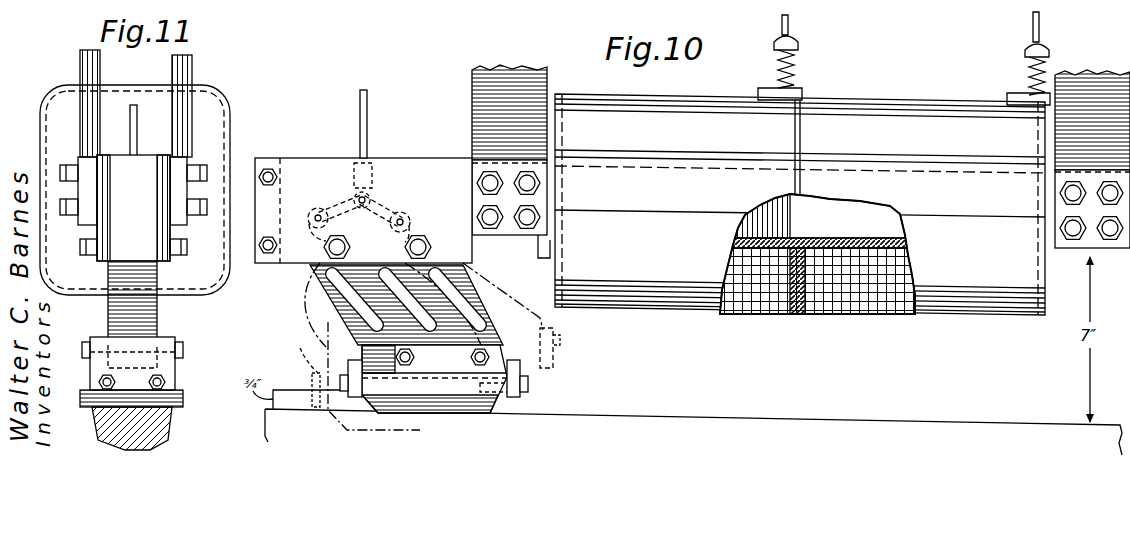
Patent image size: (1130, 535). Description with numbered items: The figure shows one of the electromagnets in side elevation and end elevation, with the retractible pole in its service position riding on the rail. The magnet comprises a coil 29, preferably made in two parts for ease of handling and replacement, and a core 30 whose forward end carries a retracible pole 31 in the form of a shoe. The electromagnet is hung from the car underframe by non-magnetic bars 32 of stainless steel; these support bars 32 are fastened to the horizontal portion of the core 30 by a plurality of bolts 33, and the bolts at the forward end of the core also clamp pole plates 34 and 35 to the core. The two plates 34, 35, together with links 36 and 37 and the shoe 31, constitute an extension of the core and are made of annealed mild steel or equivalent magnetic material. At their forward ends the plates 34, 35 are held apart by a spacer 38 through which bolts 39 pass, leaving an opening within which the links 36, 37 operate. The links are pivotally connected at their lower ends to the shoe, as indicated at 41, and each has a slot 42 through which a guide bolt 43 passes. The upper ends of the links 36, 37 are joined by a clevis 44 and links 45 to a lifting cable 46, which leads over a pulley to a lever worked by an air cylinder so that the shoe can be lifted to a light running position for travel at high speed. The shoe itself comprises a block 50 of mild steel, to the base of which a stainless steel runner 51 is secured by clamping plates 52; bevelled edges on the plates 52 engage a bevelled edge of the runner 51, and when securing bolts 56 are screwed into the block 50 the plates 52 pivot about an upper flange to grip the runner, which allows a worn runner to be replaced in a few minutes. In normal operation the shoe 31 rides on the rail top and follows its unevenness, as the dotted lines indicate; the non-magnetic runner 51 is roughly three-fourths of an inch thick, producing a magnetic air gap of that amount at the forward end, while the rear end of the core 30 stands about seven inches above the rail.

In FIG. 11, the coil 29 is at (228, 107).
In FIG. 10, the coil 29 is at (848, 125).
In FIG. 10, the core 30 is at (820, 254).
In FIG. 11, the retracible pole 31 is at (176, 340).
In FIG. 10, the retracible pole 31 is at (546, 334).
In FIG. 11, the non-magnetic bars 32 is at (82, 62).
In FIG. 10, the non-magnetic bars 32 is at (512, 77).
In FIG. 10, the bolts 33 is at (527, 181).
In FIG. 11, the pole plate 34 is at (178, 160).
In FIG. 11, the pole plate 35 is at (100, 160).
In FIG. 11, the link 36 is at (158, 313).
In FIG. 10, the link 36 is at (335, 311).
In FIG. 10, the link 37 is at (478, 302).
In FIG. 11, the spacer 38 is at (140, 170).
In FIG. 10, the spacer 38 is at (282, 196).
In FIG. 10, the bolts 39 is at (266, 170).
In FIG. 11, the pivotal connection 41 is at (184, 350).
In FIG. 10, the pivotal connection 41 is at (470, 361).
In FIG. 10, the slot 42 is at (355, 289).
In FIG. 10, the guide bolt 43 is at (422, 240).
In FIG. 10, the clevis 44 is at (336, 206).
In FIG. 10, the links 45 is at (392, 209).
In FIG. 11, the lifting cable 46 is at (132, 105).
In FIG. 10, the lifting cable 46 is at (368, 107).
In FIG. 11, the block 50 is at (100, 340).
In FIG. 10, the block 50 is at (460, 380).
In FIG. 11, the runner 51 is at (180, 400).
In FIG. 10, the runner 51 is at (437, 408).
In FIG. 11, the clamping plates 52 is at (168, 365).
In FIG. 10, the clamping plates 52 is at (330, 372).
In FIG. 11, the securing bolts 56 is at (178, 382).
In FIG. 10, the securing bolts 56 is at (524, 383).